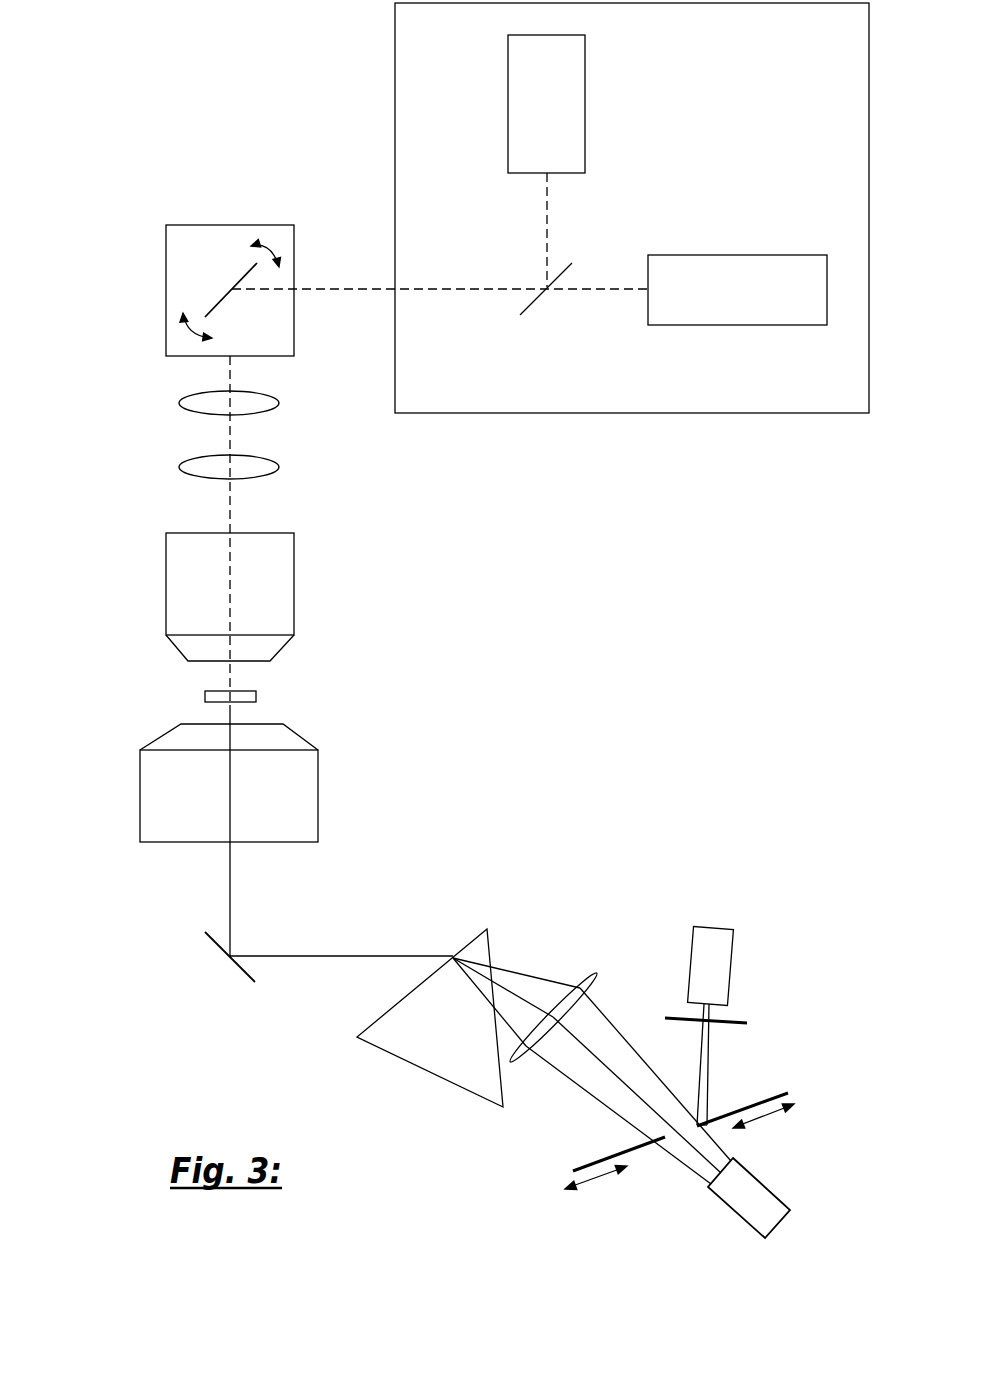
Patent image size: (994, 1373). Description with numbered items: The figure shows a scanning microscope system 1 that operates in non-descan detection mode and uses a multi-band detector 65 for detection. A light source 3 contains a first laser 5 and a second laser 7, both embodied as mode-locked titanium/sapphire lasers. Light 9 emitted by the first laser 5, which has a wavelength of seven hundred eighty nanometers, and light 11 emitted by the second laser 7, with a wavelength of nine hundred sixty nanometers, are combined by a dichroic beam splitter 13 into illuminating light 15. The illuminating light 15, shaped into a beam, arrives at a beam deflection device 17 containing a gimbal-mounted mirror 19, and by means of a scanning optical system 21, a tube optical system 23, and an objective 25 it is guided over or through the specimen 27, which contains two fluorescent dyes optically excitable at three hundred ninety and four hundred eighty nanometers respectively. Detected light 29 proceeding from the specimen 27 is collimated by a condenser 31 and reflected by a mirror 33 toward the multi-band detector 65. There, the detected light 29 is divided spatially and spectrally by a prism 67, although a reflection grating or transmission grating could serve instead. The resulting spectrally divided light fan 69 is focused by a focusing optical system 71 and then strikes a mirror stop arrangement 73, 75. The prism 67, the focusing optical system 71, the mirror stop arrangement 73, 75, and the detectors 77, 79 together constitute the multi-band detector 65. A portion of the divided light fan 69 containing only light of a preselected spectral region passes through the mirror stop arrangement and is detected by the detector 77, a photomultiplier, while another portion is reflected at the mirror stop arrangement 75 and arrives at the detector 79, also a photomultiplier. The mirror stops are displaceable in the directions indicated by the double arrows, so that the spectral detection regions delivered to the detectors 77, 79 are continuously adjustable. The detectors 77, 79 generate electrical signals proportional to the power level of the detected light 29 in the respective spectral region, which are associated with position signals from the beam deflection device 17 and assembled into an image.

The scanning microscope system 1 is at (768, 606).
The light source 3 is at (843, 122).
The first laser 5 is at (572, 80).
The second laser 7 is at (748, 297).
The light emitted by first laser 9 is at (547, 232).
The light emitted by second laser 11 is at (593, 290).
The dichroic beam splitter 13 is at (560, 268).
The illuminating light 15 is at (356, 290).
The beam deflection device 17 is at (192, 252).
The gimbal-mounted mirror 19 is at (217, 295).
The scanning optical system 21 is at (255, 403).
The tube optical system 23 is at (255, 467).
The objective 25 is at (190, 563).
The specimen 27 is at (217, 693).
The detected light 29 is at (233, 711).
The condenser 31 is at (305, 790).
The mirror 33 is at (213, 950).
The multi-band detector 65 is at (812, 825).
The prism 67 is at (452, 1053).
The spectrally divided light fan 69 is at (540, 945).
The focusing optical system 71 is at (599, 972).
The mirror stop arrangement 73 is at (635, 1152).
The mirror stop arrangement 75 is at (752, 1098).
The detector 77 is at (760, 1195).
The detector 79 is at (707, 950).